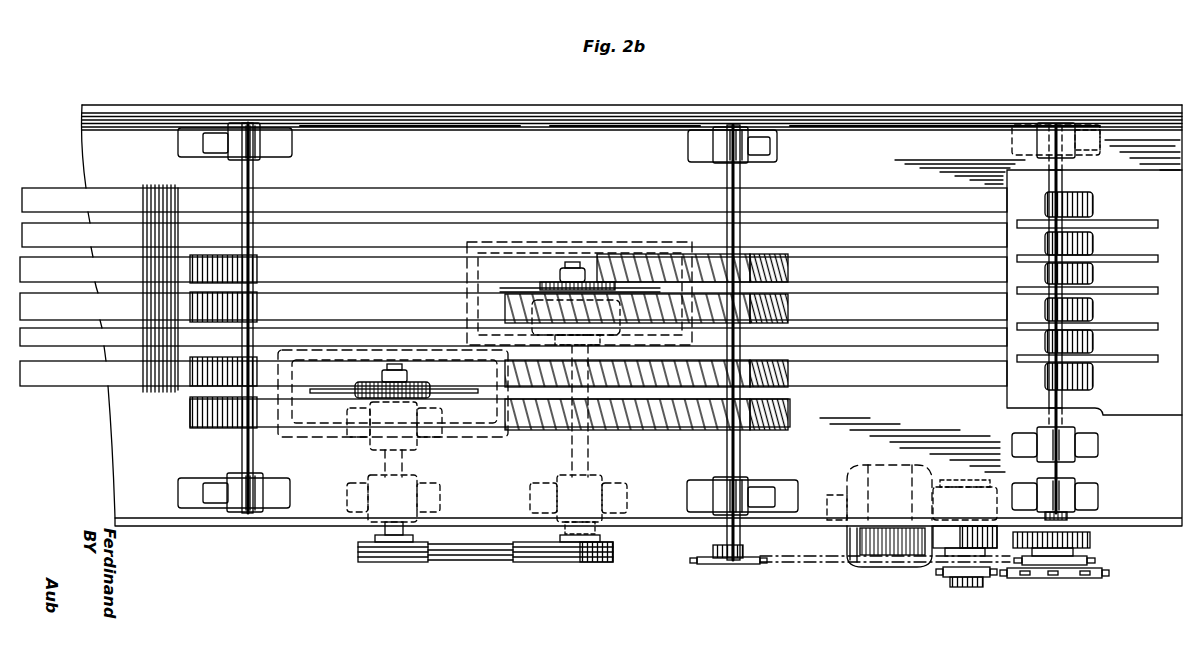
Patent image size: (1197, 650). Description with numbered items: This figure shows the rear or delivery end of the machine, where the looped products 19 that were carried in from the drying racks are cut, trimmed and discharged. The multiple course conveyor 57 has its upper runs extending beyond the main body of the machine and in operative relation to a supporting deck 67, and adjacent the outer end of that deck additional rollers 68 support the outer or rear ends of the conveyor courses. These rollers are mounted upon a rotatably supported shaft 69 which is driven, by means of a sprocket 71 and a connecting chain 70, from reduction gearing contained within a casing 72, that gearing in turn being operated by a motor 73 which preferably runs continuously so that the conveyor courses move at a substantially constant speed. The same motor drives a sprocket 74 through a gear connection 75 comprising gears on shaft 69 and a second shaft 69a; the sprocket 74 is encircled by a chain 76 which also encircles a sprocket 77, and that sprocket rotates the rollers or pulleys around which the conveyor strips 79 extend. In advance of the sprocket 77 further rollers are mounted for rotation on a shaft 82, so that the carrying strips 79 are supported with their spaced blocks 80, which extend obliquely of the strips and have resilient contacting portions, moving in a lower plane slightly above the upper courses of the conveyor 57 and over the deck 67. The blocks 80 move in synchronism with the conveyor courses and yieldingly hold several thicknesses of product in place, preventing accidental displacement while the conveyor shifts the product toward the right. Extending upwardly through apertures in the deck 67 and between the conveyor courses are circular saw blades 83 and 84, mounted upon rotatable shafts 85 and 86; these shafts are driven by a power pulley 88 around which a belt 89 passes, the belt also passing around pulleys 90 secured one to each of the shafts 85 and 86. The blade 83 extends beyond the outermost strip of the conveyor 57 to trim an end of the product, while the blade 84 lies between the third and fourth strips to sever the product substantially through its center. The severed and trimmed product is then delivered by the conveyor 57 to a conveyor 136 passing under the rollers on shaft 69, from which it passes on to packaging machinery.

The looped products 19 is at (147, 198).
The multiple course conveyor 57 is at (42, 233).
The supporting deck 67 is at (850, 128).
The additional rollers 68 is at (1090, 397).
The shaft 69 is at (1088, 403).
The shaft 69a is at (1068, 471).
The connecting chain 70 is at (1003, 580).
The sprocket 71 is at (1073, 580).
The casing 72 is at (962, 478).
The motor 73 is at (882, 553).
The sprocket 74 is at (1090, 560).
The gear connection 75 is at (1092, 540).
The chain 76 is at (808, 565).
The sprocket 77 is at (722, 567).
The conveyor strips 79 is at (403, 297).
The spaced blocks 80 is at (775, 258).
The shaft 82 is at (238, 454).
The circular saw blade 83 is at (478, 393).
The circular saw blade 84 is at (618, 260).
The rotatable shaft 85 is at (393, 458).
The rotatable shaft 86 is at (580, 456).
The power pulley 88 is at (540, 565).
The belt 89 is at (472, 565).
The pulleys 90 is at (378, 562).
The conveyor 136 is at (1133, 253).